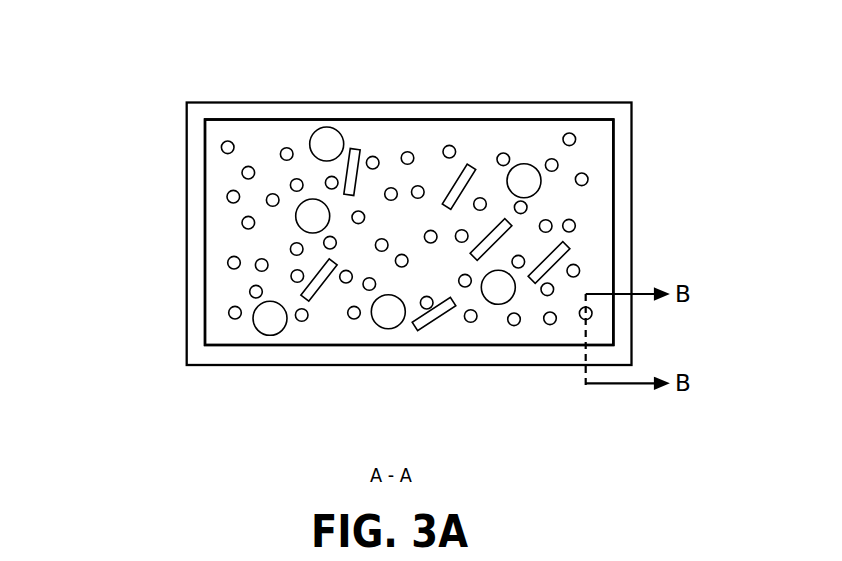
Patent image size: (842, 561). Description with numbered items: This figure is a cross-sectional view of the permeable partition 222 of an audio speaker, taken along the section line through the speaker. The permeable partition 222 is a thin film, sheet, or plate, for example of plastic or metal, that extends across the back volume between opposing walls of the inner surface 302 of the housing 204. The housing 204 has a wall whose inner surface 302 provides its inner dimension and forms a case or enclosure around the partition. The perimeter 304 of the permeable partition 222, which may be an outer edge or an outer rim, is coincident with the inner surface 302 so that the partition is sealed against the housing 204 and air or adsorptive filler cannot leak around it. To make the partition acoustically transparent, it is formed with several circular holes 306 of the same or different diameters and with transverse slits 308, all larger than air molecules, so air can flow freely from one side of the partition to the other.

The housing 204 is at (622, 241).
The permeable partition 222 is at (323, 320).
The inner surface 302 is at (265, 132).
The perimeter 304 is at (613, 163).
The holes 306 is at (157, 233).
The transverse slits 308 is at (440, 317).